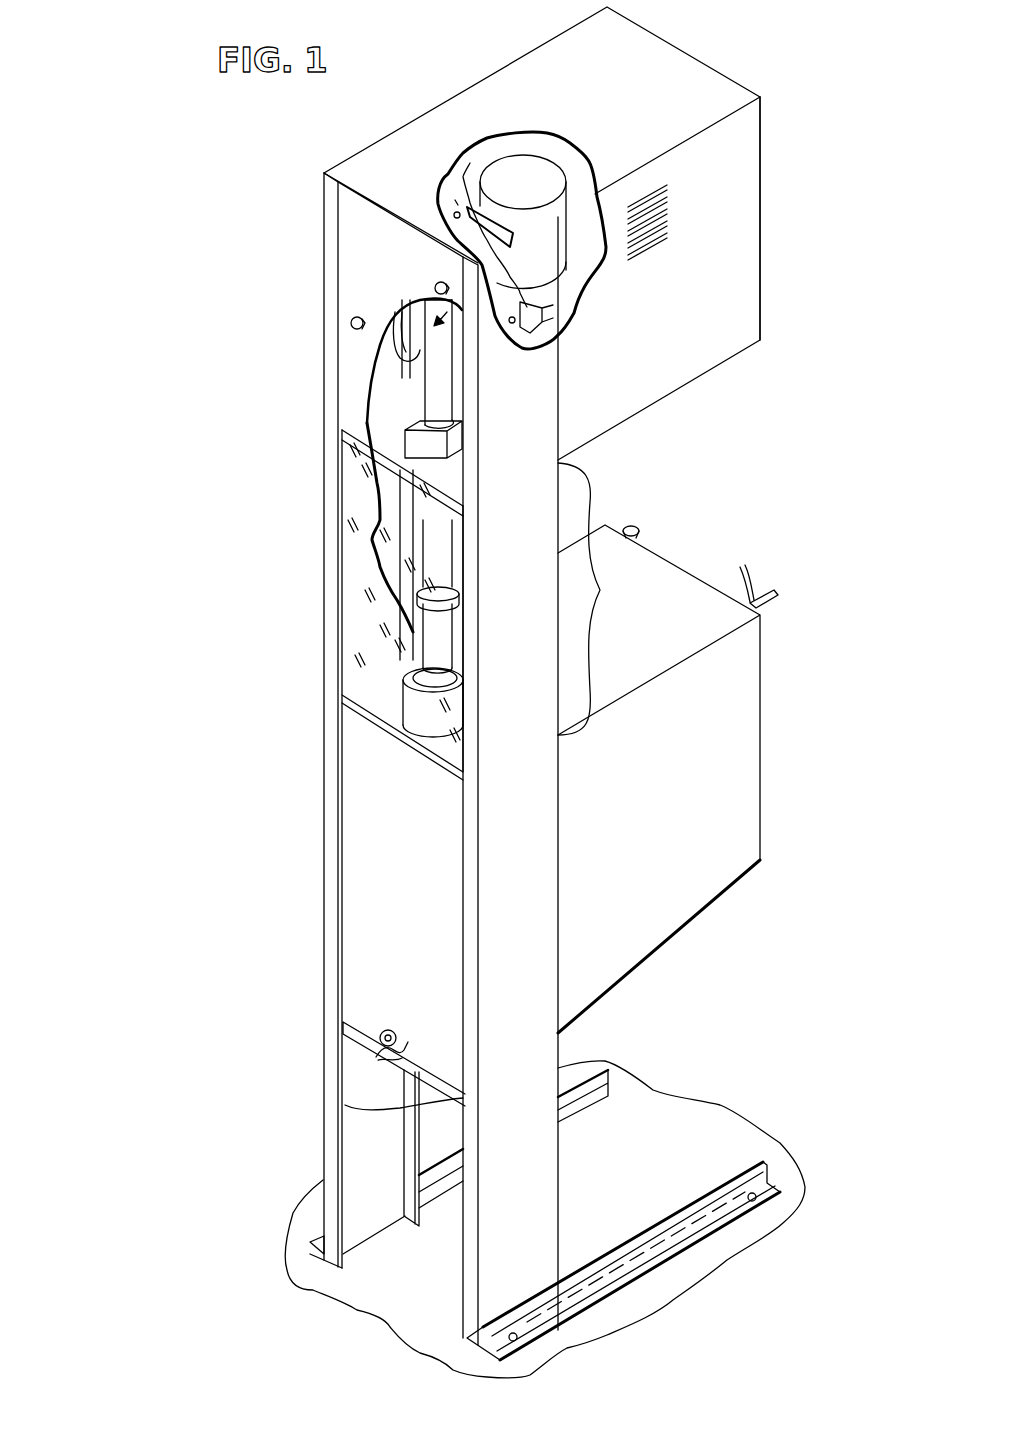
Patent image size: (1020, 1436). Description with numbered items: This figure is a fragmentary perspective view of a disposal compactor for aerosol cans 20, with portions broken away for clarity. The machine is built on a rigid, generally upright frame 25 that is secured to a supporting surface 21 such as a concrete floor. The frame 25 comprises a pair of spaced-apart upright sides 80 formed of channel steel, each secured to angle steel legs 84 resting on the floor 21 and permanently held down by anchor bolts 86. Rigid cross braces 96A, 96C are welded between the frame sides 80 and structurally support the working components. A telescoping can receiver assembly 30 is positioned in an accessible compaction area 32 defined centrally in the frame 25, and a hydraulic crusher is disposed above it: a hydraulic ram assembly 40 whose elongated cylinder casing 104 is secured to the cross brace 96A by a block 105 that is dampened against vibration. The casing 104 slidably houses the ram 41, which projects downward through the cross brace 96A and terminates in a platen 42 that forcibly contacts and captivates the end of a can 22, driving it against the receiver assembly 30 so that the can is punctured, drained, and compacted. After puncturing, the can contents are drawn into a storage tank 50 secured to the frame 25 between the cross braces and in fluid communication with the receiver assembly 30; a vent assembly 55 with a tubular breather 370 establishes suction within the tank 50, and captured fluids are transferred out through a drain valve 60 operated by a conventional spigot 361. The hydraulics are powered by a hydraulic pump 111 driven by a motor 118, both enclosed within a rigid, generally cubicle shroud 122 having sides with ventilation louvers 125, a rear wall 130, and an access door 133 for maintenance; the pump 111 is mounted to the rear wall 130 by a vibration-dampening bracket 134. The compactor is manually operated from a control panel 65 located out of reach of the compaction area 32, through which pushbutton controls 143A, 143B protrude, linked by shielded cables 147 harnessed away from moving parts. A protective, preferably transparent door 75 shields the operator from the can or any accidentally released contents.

The disposal compactor for aerosol cans 20 is at (124, 420).
The supporting surface 21 is at (712, 1138).
The can 22 is at (408, 660).
The frame 25 is at (300, 566).
The telescoping can receiver assembly 30 is at (397, 705).
The compaction area 32 is at (598, 590).
The hydraulic ram assembly 40 is at (452, 390).
The ram 41 is at (437, 528).
The platen 42 is at (462, 593).
The storage tank 50 is at (735, 704).
The vent assembly 55 is at (782, 606).
The drain valve 60 is at (376, 1057).
The control panel 65 is at (350, 262).
The protective door 75 is at (350, 483).
The upright sides 80 is at (445, 1148).
The legs 84 is at (596, 1090).
The anchor bolts 86 is at (758, 1195).
The cross brace 96A is at (353, 452).
The cross brace 96C is at (348, 1018).
The cylinder casing 104 is at (425, 392).
The block 105 is at (408, 445).
The hydraulic pump 111 is at (556, 322).
The motor 118 is at (509, 175).
The shroud 122 is at (680, 82).
The ventilation louvers 125 is at (673, 213).
The rear wall 130 is at (437, 185).
The access door 133 is at (770, 108).
The vibration-dampening bracket 134 is at (517, 236).
The pushbutton control 143A is at (350, 325).
The pushbutton control 143B is at (434, 287).
The cables 147 is at (393, 352).
The spigot 361 is at (386, 1028).
The tubular breather 370 is at (644, 516).